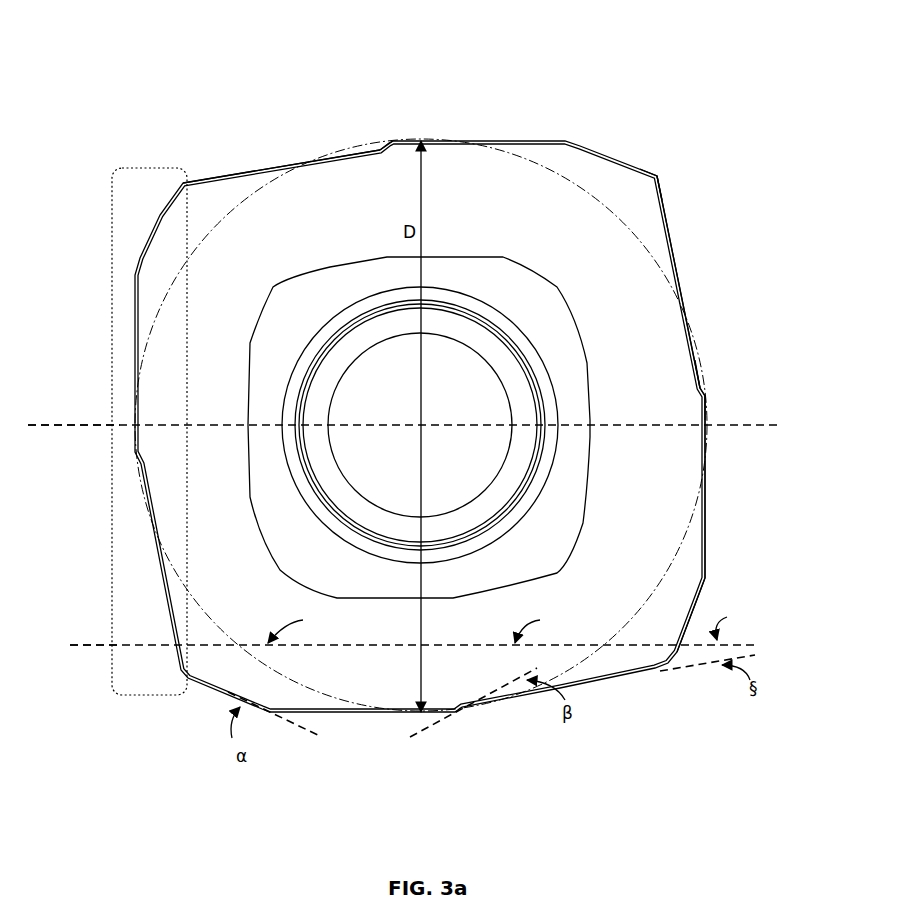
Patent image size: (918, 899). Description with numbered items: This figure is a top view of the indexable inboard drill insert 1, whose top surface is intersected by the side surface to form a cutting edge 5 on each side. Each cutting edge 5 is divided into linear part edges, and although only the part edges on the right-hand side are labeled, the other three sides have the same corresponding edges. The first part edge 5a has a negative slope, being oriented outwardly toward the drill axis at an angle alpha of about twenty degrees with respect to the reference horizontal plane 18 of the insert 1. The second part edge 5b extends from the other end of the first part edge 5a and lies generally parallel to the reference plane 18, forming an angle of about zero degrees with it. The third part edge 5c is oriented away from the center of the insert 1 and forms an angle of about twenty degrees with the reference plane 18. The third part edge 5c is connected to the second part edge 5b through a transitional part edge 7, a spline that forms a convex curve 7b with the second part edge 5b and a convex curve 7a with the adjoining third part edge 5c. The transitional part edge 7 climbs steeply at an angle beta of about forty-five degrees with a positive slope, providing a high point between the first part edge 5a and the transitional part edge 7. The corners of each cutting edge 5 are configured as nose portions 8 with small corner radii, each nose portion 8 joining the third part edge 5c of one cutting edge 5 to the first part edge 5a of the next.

The drill insert 1 is at (580, 82).
The cutting edge 5 is at (110, 380).
The first part edge 5a is at (702, 598).
The second part edge 5b is at (706, 488).
The third part edge 5c is at (680, 250).
The transitional part edge 7 is at (703, 388).
The convex curve 7a is at (375, 150).
The convex curve 7b is at (393, 140).
The nose portion 8 is at (660, 173).
The reference horizontal plane 18 is at (68, 424).